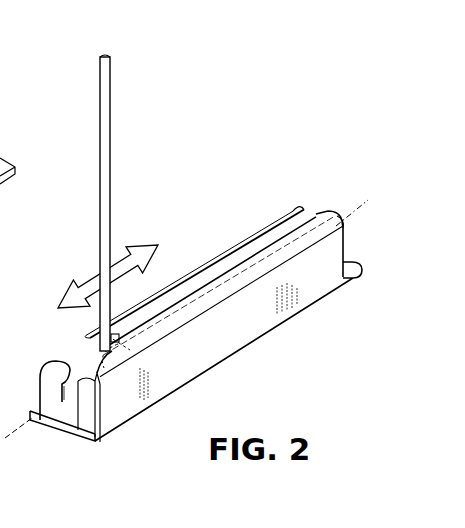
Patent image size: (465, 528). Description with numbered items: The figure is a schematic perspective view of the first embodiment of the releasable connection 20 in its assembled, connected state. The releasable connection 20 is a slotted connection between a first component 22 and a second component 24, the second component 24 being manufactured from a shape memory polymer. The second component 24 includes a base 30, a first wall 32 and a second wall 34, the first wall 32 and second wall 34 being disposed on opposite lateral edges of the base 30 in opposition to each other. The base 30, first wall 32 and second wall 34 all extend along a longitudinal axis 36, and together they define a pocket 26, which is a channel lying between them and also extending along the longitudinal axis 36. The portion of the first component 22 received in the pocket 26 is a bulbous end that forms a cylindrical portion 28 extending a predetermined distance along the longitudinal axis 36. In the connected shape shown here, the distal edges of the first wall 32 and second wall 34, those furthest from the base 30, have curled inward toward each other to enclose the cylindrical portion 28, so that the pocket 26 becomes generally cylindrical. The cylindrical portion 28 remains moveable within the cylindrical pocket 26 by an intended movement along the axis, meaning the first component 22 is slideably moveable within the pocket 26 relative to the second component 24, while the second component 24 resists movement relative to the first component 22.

The releasable connection 20 is at (192, 190).
The first component 22 is at (105, 146).
The second component 24 is at (257, 339).
The pocket 26 is at (80, 392).
The cylindrical portion 28 is at (130, 374).
The base 30 is at (62, 362).
The first wall 32 is at (210, 261).
The second wall 34 is at (344, 221).
The longitudinal axis 36 is at (19, 432).